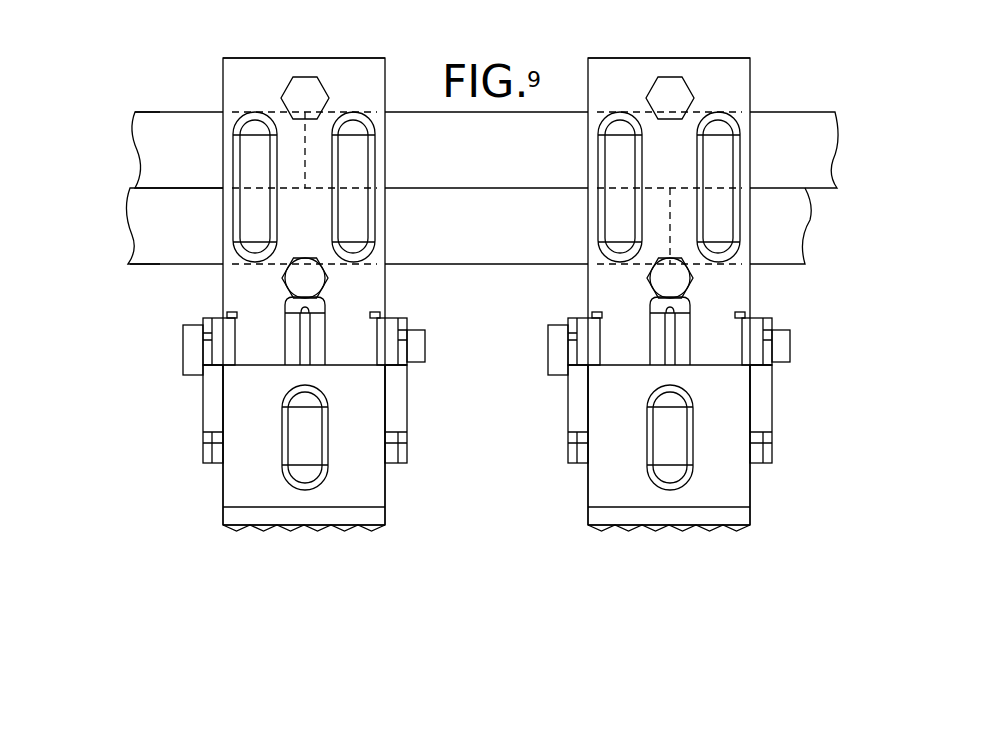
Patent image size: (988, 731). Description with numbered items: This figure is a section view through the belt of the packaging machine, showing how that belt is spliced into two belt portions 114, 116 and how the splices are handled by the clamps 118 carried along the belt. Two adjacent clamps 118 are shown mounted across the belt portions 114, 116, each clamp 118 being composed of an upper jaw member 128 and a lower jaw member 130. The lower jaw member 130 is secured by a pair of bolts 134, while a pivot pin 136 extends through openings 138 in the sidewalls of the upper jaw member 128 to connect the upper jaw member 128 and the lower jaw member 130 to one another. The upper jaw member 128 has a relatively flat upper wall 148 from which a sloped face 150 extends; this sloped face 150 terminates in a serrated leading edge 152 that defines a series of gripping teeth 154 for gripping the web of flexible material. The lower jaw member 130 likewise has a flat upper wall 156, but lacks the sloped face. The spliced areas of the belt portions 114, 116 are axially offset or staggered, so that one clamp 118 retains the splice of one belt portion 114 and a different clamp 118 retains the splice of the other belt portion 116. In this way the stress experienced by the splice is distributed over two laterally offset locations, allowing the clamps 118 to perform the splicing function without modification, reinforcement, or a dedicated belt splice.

The belt portion 114 is at (140, 264).
The belt portion 116 is at (178, 128).
The clamp 118 is at (123, 448).
The upper jaw member 128 is at (423, 520).
The lower jaw member 130 is at (352, 43).
The bolt 134 is at (298, 88).
The pivot pin 136 is at (197, 357).
The opening 138 is at (102, 125).
The upper wall 148 is at (245, 483).
The sloped face 150 is at (248, 513).
The serrated leading edge 152 is at (360, 545).
The gripping teeth 154 is at (282, 527).
The flat upper wall 156 is at (372, 89).